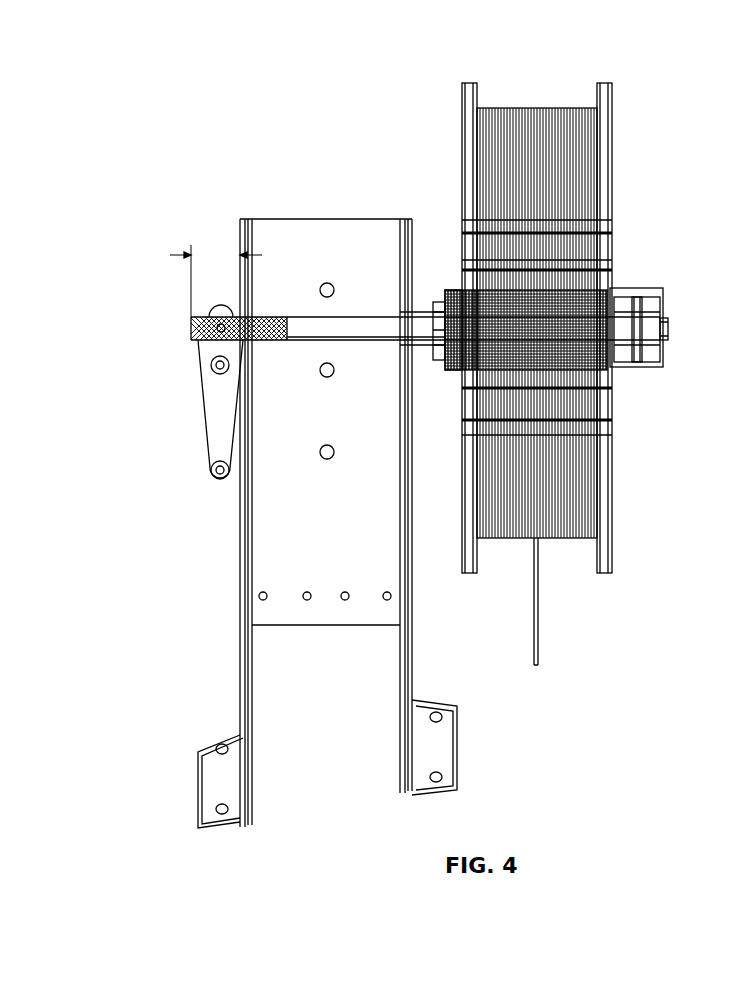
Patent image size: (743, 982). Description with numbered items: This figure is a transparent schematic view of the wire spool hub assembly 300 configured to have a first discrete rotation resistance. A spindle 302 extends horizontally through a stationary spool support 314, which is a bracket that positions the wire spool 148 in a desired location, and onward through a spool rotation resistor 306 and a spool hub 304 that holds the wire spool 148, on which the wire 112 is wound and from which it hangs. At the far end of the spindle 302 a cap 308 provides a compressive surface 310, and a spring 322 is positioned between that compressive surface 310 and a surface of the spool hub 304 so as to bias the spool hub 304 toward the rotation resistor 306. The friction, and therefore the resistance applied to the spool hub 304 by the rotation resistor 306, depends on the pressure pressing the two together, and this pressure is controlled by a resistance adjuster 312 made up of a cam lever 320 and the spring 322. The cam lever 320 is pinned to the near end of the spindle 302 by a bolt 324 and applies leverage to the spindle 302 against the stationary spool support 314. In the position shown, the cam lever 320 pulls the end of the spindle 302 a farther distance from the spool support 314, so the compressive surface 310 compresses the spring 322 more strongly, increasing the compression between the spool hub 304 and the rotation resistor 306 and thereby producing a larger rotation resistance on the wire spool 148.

The wire spool hub assembly 300 is at (205, 72).
The spool support 314 is at (334, 224).
The spindle 302 is at (375, 325).
The resistance adjuster 312 is at (180, 293).
The cam lever 320 is at (213, 422).
The bolt 324 is at (198, 343).
The spool rotation resistor 306 is at (432, 350).
The spool hub 304 is at (445, 298).
The wire spool 148 is at (462, 85).
The wire 112 is at (508, 108).
The compressive surface 310 is at (642, 368).
The spring 322 is at (637, 310).
The cap 308 is at (668, 326).